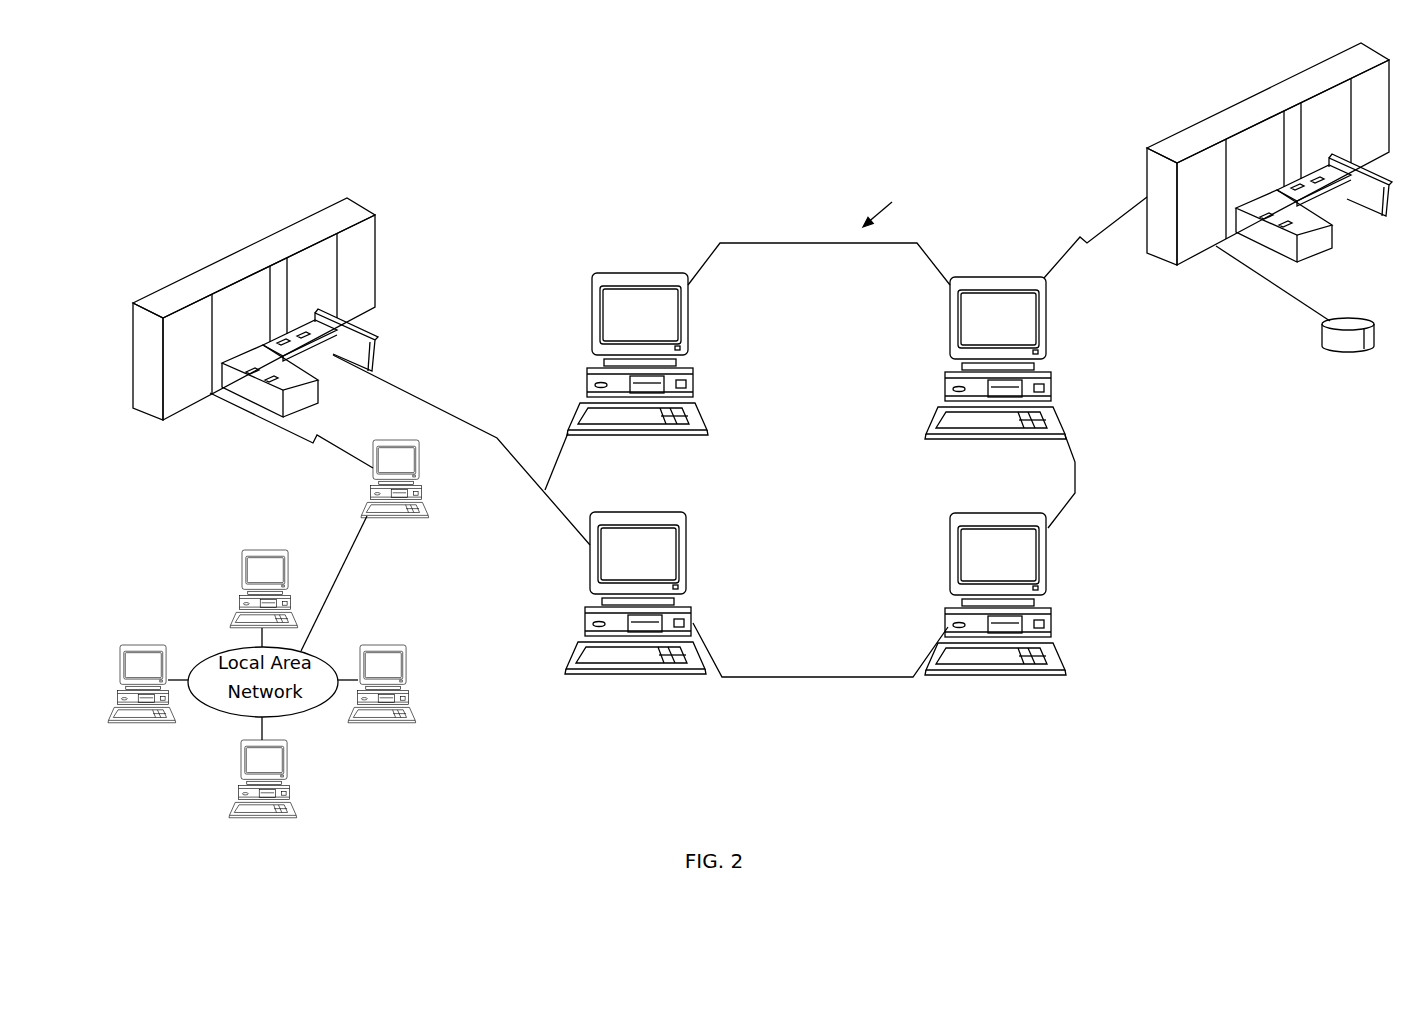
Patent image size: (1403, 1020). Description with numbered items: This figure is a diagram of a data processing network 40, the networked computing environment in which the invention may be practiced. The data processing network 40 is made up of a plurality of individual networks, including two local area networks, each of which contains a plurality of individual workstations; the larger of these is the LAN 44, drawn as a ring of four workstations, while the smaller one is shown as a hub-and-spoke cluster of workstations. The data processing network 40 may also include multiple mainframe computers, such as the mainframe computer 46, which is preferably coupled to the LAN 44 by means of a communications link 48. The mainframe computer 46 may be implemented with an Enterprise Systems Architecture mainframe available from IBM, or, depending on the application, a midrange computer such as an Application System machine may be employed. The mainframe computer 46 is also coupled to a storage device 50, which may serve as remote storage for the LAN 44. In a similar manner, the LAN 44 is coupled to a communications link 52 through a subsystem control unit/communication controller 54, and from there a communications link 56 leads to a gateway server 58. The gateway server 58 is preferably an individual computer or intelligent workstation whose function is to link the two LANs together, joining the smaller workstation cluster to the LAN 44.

The data processing network 40 is at (890, 205).
The LAN 44 is at (881, 460).
The mainframe computer 46 is at (1223, 110).
The communications link 48 is at (1122, 212).
The storage device 50 is at (1353, 320).
The communications link 52 is at (417, 400).
The subsystem control unit/communication controller 54 is at (248, 245).
The communications link 56 is at (263, 425).
The gateway server 58 is at (420, 461).